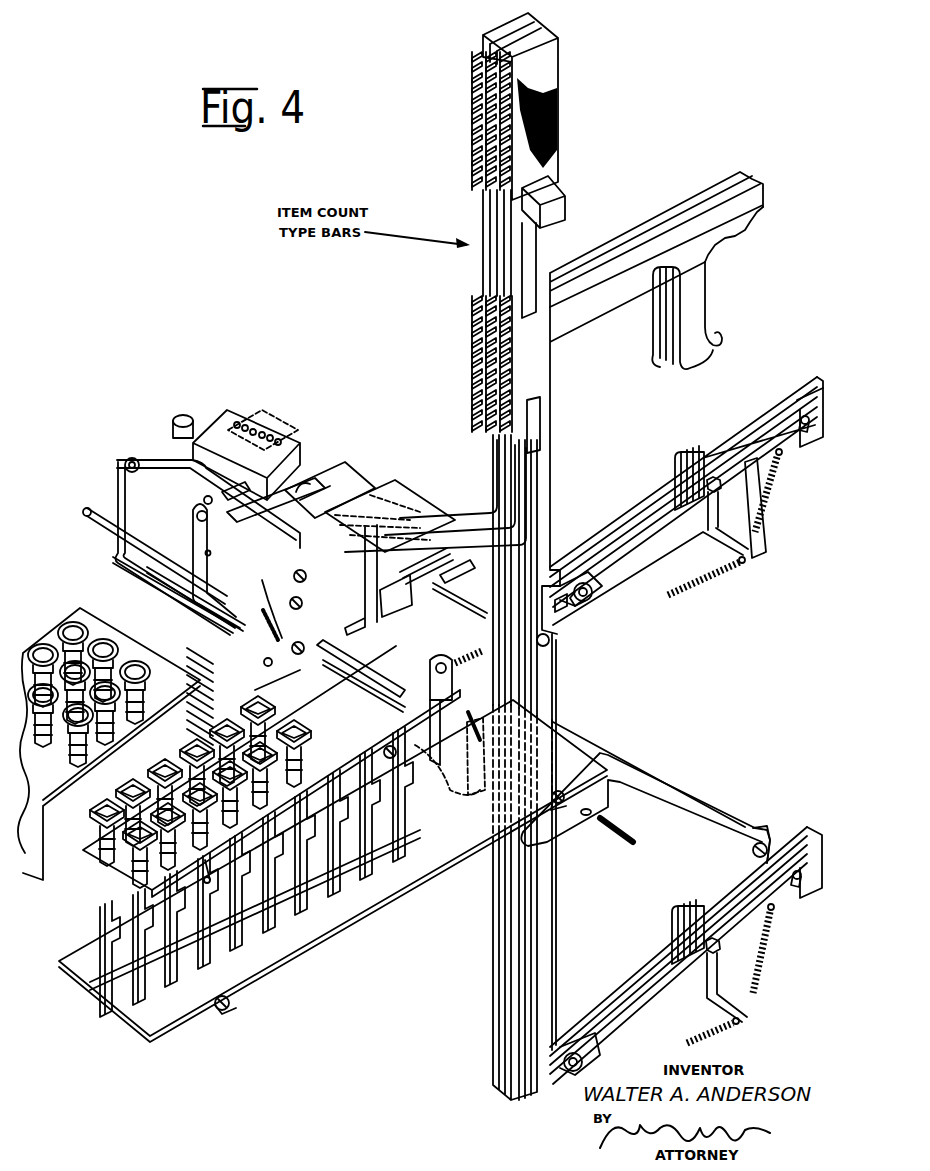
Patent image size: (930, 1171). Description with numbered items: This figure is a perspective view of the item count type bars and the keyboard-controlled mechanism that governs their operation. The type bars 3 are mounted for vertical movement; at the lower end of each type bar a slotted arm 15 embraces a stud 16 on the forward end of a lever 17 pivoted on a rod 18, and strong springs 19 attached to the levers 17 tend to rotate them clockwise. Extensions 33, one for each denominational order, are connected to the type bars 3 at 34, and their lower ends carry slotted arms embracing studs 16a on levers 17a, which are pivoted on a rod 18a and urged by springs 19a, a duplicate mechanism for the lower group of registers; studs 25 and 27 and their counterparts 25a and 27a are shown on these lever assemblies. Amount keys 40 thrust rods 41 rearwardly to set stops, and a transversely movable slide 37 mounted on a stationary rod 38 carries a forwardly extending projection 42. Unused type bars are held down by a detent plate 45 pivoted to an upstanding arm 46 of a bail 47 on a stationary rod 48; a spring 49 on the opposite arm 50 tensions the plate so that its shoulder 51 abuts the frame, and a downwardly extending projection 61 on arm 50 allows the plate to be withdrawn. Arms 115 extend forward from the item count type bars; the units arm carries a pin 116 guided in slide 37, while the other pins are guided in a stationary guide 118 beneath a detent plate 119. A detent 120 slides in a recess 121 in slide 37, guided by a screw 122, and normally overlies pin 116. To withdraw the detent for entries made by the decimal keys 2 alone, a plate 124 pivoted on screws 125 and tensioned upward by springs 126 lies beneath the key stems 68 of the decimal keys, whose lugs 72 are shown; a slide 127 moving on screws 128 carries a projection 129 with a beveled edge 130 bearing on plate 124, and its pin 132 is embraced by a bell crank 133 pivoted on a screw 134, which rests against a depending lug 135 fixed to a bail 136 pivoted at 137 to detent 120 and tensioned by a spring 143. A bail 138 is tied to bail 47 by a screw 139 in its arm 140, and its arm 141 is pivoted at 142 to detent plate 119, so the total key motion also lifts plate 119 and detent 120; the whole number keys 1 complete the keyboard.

The whole number keys 1 is at (145, 635).
The decimal keys 2 is at (110, 866).
The type bars 3 is at (510, 268).
The slotted arm 15 is at (562, 615).
The stud 16 is at (588, 601).
The levers 17 is at (650, 505).
The rod 18 is at (720, 535).
The springs 19 is at (705, 582).
The stud 25 is at (808, 432).
The spring 27 is at (770, 500).
The extensions 33 is at (530, 920).
The connection point 34 is at (548, 647).
The slide 37 is at (455, 590).
The stationary rod 38 is at (465, 615).
The amount keys 40 is at (100, 748).
The rods 41 is at (193, 655).
The projection 42 is at (427, 603).
The detent plate 45 is at (398, 512).
The upstanding arm 46 is at (312, 570).
The bail 47 is at (363, 693).
The stationary transverse rod 48 is at (153, 543).
The spring 49 is at (478, 662).
The upstanding arm 50 is at (439, 669).
The shoulder 51 is at (272, 515).
The projection 61 is at (447, 786).
The keys 68 is at (125, 922).
The lugs 72 is at (307, 887).
The arms 115 is at (475, 530).
The pin 116 is at (365, 595).
The stationary guide 118 is at (295, 455).
The detent plate 119 is at (225, 417).
The detent 120 is at (335, 490).
The recess 121 is at (375, 510).
The screw 122 is at (310, 495).
The plate 124 is at (270, 970).
The screws 125 is at (560, 808).
The springs 126 is at (432, 700).
The slide 127 is at (590, 820).
The screws 128 is at (750, 852).
The projection 129 is at (500, 815).
The beveled edge 130 is at (640, 826).
The pin 132 is at (262, 668).
The bell crank 133 is at (285, 682).
The screw 134 is at (305, 645).
The depending lug 135 is at (262, 640).
The bail 136 is at (197, 600).
The pivot 137 is at (193, 505).
The bail 138 is at (137, 563).
The screw 139 is at (314, 595).
The upstanding arm 140 is at (265, 615).
The upstanding arm 141 is at (123, 500).
The pivot 142 is at (127, 458).
The spring 143 is at (226, 490).
The levers 17a is at (640, 1022).
The rod 18a is at (672, 936).
The springs 19a is at (733, 1030).
The stud 25a is at (805, 895).
The spring 27a is at (770, 965).
The studs 16a is at (568, 1075).